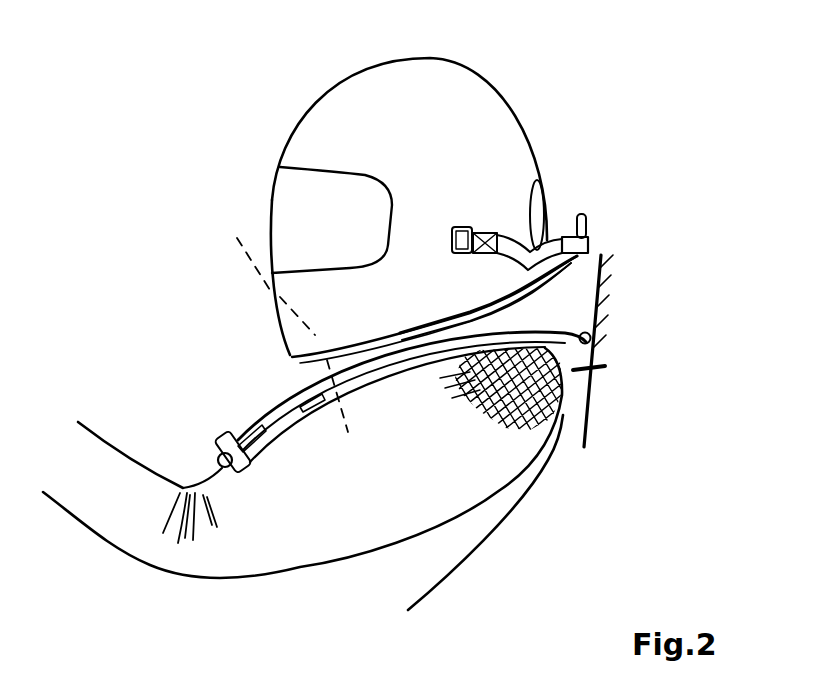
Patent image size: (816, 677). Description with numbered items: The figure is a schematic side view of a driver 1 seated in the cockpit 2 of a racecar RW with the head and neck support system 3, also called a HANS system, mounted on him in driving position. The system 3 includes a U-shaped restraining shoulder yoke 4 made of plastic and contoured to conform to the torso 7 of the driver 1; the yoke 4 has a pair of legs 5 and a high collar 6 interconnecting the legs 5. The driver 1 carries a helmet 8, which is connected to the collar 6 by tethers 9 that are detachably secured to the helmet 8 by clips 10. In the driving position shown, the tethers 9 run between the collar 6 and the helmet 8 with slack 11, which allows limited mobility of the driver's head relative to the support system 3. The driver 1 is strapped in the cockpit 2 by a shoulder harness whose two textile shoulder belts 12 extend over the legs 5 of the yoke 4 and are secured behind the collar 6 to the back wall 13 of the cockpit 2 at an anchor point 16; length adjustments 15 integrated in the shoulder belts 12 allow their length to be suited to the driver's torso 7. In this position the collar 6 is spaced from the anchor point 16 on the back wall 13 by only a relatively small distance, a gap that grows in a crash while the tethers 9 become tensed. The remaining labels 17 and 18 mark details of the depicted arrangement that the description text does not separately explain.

The driver 1 is at (497, 537).
The cockpit 2 is at (573, 370).
The head and neck support system 3 is at (598, 190).
The restraining shoulder yoke 4 is at (588, 260).
The legs 5 is at (383, 372).
The collar 6 is at (558, 300).
The torso 7 is at (283, 317).
The helmet 8 is at (348, 110).
The tethers 9 is at (512, 232).
The clips 10 is at (450, 230).
The slack 11 is at (541, 182).
The shoulder belts 12 is at (273, 397).
The back wall 13 is at (590, 412).
The length adjustments 15 is at (222, 440).
The anchor point 16 is at (592, 336).
The cushion edge 17 is at (364, 356).
The lower cushion strip 18 is at (280, 427).
The racecar RW is at (612, 393).